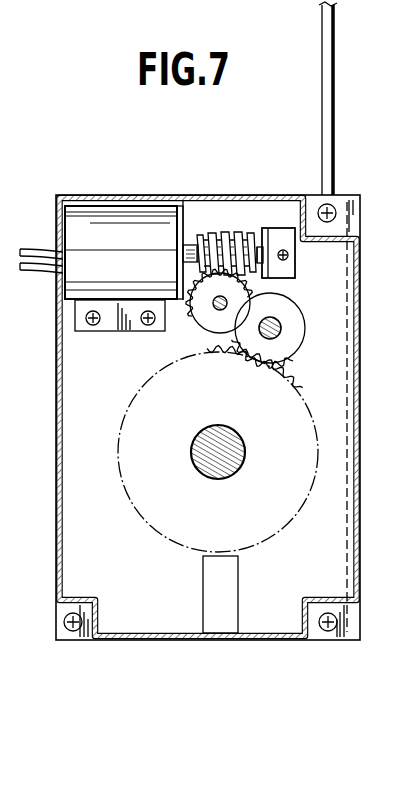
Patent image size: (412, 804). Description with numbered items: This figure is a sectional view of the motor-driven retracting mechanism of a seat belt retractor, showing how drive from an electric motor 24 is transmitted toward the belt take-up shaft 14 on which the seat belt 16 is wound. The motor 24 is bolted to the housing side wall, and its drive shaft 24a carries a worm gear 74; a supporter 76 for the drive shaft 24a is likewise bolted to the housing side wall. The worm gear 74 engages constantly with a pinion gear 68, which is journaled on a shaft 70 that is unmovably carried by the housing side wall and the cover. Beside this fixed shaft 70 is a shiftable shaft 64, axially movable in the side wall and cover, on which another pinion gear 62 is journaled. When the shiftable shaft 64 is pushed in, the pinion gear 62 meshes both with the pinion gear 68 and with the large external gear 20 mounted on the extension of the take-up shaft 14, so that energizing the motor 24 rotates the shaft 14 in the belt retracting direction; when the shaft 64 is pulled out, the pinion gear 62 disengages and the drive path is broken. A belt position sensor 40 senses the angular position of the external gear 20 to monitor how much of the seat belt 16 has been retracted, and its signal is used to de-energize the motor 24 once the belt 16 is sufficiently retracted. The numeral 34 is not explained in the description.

The belt take-up shaft 14 is at (240, 458).
The seat belt 16 is at (336, 52).
The external gear 20 is at (313, 412).
The electric motor 24 is at (122, 217).
The drive shaft 24a is at (192, 250).
The housing 34 is at (360, 443).
The belt position sensor 40 is at (228, 625).
The pinion gear 62 is at (304, 318).
The shiftable shaft 64 is at (281, 328).
The pinion gear 68 is at (195, 322).
The shaft 70 is at (214, 309).
The worm gear 74 is at (207, 240).
The supporter 76 is at (278, 237).